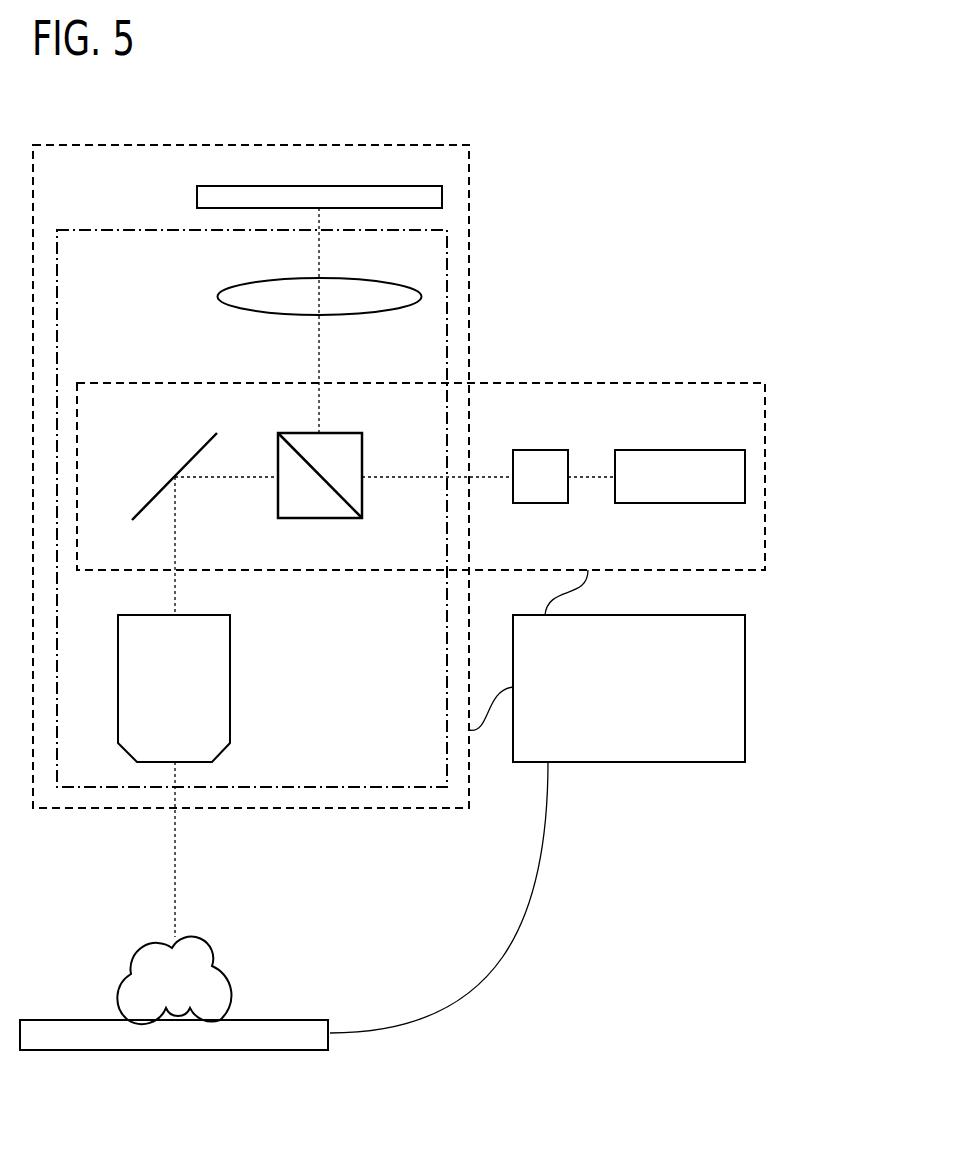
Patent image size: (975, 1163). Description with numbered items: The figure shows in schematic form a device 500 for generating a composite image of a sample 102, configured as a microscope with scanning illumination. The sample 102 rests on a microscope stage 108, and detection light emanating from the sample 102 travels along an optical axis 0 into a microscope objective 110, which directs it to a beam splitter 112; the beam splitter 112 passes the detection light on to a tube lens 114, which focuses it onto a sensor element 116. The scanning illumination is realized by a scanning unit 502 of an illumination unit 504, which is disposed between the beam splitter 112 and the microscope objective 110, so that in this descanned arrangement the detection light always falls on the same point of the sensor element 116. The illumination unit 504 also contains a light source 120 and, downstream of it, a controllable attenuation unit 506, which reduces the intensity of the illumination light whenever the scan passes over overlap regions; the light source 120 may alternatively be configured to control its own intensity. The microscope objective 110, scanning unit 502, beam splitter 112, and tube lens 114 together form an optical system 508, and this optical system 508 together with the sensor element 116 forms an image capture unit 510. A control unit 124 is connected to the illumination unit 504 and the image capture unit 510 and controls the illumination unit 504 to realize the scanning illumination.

The device 500 is at (624, 126).
The image capture unit 510 is at (480, 212).
The optical system 508 is at (458, 322).
The illumination unit 504 is at (657, 372).
The optical axis 0 is at (175, 867).
The sensor element 116 is at (197, 196).
The tube lens 114 is at (226, 298).
The scanning unit 502 is at (188, 455).
The beam splitter 112 is at (350, 450).
The attenuation unit 506 is at (540, 460).
The light source 120 is at (675, 460).
The microscope objective 110 is at (220, 678).
The control unit 124 is at (735, 688).
The sample 102 is at (197, 952).
The microscope stage 108 is at (175, 1037).